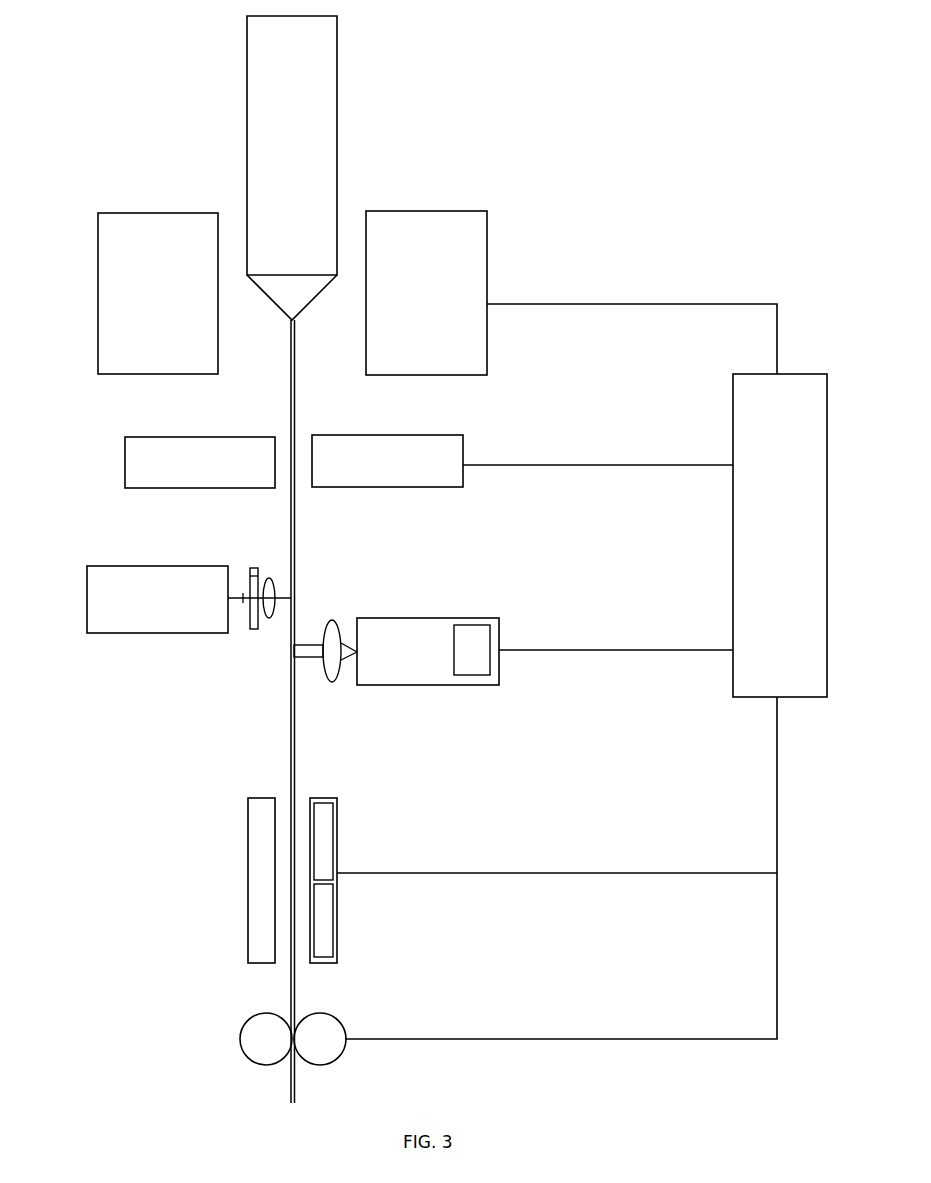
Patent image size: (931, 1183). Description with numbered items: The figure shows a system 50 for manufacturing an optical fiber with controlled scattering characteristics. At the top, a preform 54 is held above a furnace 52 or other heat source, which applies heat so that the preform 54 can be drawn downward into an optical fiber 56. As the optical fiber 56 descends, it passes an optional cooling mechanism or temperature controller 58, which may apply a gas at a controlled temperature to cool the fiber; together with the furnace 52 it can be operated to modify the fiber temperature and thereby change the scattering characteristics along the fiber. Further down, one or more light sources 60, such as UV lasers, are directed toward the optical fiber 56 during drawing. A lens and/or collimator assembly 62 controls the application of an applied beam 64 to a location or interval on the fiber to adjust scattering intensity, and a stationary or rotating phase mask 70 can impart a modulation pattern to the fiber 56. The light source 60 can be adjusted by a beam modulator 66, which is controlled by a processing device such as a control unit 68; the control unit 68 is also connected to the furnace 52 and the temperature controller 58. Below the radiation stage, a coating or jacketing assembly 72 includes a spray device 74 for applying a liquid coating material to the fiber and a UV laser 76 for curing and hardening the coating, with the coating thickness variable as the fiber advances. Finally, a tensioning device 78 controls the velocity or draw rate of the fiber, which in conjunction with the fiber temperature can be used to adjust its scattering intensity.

The system 50 is at (66, 71).
The furnace 52 is at (473, 291).
The preform 54 is at (321, 162).
The optical fiber 56 is at (290, 398).
The temperature controller 58 is at (447, 460).
The light source 60 is at (142, 625).
The lens and/or collimator assembly 62 is at (272, 580).
The applied beam 64 is at (243, 595).
The beam modulator 66 is at (473, 637).
The control unit 68 is at (586, 706).
The phase mask 70 is at (253, 633).
The coating assembly 72 is at (247, 823).
The spray device 74 is at (325, 827).
The UV laser 76 is at (327, 920).
The tensioning device 78 is at (258, 1032).